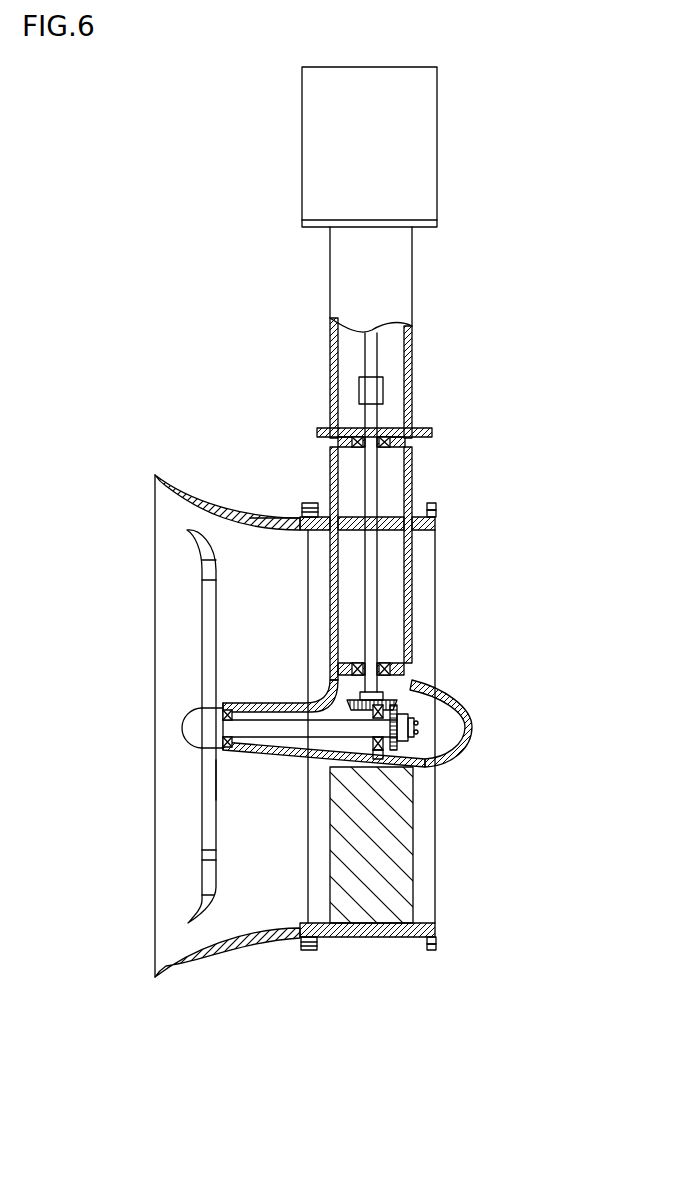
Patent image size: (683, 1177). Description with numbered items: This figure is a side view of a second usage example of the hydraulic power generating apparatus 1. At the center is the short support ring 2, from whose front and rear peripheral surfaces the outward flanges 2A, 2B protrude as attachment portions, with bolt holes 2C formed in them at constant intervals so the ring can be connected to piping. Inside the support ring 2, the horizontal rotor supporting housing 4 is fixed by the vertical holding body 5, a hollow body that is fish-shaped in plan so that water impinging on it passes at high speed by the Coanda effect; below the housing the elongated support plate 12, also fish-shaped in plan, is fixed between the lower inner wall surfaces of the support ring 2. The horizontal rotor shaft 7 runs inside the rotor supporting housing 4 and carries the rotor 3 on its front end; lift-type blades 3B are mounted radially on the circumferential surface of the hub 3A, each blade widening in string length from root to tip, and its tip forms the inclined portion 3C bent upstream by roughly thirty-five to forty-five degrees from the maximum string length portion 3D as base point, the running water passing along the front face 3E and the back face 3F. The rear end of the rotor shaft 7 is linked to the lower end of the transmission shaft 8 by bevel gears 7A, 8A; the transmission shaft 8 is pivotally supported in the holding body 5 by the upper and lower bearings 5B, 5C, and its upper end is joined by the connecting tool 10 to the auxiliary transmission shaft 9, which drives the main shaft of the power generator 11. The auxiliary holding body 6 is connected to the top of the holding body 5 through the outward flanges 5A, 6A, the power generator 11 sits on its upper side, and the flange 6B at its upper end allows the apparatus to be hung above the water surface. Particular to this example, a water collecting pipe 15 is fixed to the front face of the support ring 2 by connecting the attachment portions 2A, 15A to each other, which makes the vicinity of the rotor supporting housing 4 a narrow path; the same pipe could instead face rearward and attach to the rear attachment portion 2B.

The hydraulic power generating apparatus 1 is at (233, 334).
The support ring 2 is at (442, 546).
The outward flange 2A is at (308, 503).
The outward flange 2B is at (432, 503).
The bolt hole 2C is at (437, 513).
The rotor 3 is at (190, 683).
The hub 3A is at (222, 736).
The lift-type blade 3B is at (216, 782).
The inclined portion 3C is at (205, 553).
The maximum string length portion 3D is at (203, 588).
The front face 3E is at (192, 852).
The back face 3F is at (216, 845).
The rotor supporting housing 4 is at (290, 757).
The holding body 5 is at (330, 578).
The outward flange 5A is at (418, 446).
The upper bearing 5B is at (400, 436).
The lower bearing 5C is at (395, 663).
The auxiliary holding body 6 is at (330, 300).
The outward flange 6A is at (432, 430).
The flange 6B is at (425, 222).
The rotor shaft 7 is at (306, 718).
The bevel gear 7A is at (395, 760).
The transmission shaft 8 is at (378, 605).
The bevel gear 8A is at (385, 692).
The auxiliary transmission shaft 9 is at (378, 357).
The connecting tool 10 is at (359, 390).
The power generator 11 is at (302, 140).
The support plate 12 is at (413, 885).
The water collecting pipe 15 is at (194, 486).
The attachment portion 15A is at (305, 512).